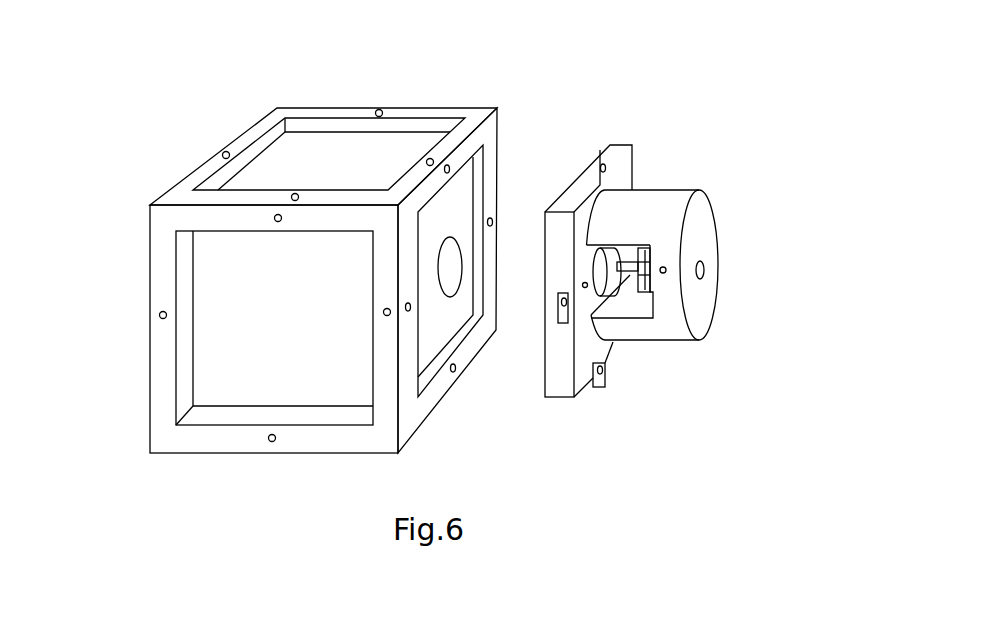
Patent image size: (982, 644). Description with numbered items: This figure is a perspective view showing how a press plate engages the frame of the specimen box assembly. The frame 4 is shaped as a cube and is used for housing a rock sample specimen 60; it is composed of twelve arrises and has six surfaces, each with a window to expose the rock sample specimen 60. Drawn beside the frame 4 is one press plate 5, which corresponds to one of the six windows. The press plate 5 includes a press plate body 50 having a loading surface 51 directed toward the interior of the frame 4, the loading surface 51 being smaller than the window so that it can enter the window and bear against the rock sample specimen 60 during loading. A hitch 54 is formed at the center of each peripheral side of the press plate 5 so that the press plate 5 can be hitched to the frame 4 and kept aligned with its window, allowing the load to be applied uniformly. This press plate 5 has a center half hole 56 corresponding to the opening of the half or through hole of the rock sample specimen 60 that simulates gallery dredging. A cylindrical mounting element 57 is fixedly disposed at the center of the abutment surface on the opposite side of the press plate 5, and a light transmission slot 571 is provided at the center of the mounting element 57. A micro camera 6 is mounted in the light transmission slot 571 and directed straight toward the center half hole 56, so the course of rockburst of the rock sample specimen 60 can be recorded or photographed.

The frame 4 is at (124, 164).
The rock sample specimen 60 is at (335, 153).
The press plate 5 is at (640, 285).
The press plate body 50 is at (640, 285).
The loading surface 51 is at (538, 380).
The hitch 54 is at (610, 400).
The center half hole 56 is at (602, 252).
The mounting element 57 is at (700, 232).
The light transmission slot 571 is at (625, 302).
The micro camera 6 is at (652, 278).